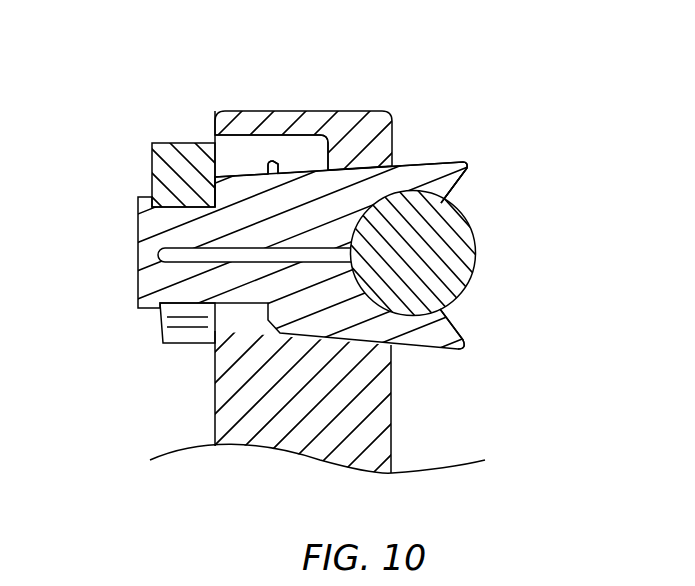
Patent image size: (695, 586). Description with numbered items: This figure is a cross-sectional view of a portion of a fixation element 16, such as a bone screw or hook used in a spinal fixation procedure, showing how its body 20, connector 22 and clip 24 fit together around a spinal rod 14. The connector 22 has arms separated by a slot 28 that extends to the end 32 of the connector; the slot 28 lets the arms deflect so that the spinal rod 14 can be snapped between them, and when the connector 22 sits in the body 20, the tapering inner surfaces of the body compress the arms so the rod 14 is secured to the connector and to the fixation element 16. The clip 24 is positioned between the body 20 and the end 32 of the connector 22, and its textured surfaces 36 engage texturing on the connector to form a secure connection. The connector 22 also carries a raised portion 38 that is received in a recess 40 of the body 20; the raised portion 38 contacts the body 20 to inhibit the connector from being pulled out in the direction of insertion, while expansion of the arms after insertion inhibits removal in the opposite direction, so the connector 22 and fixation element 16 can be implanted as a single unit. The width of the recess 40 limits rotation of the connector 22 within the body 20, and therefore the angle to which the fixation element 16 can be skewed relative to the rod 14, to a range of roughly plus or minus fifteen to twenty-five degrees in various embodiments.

The spinal rod 14 is at (458, 258).
The fixation element 16 is at (512, 398).
The body 20 is at (343, 120).
The connector 22 is at (370, 187).
The clip 24 is at (170, 168).
The slot 28 is at (305, 256).
The end 32 is at (138, 267).
The textured surfaces 36 is at (182, 325).
The raised portion 38 is at (268, 163).
The recess 40 is at (293, 150).